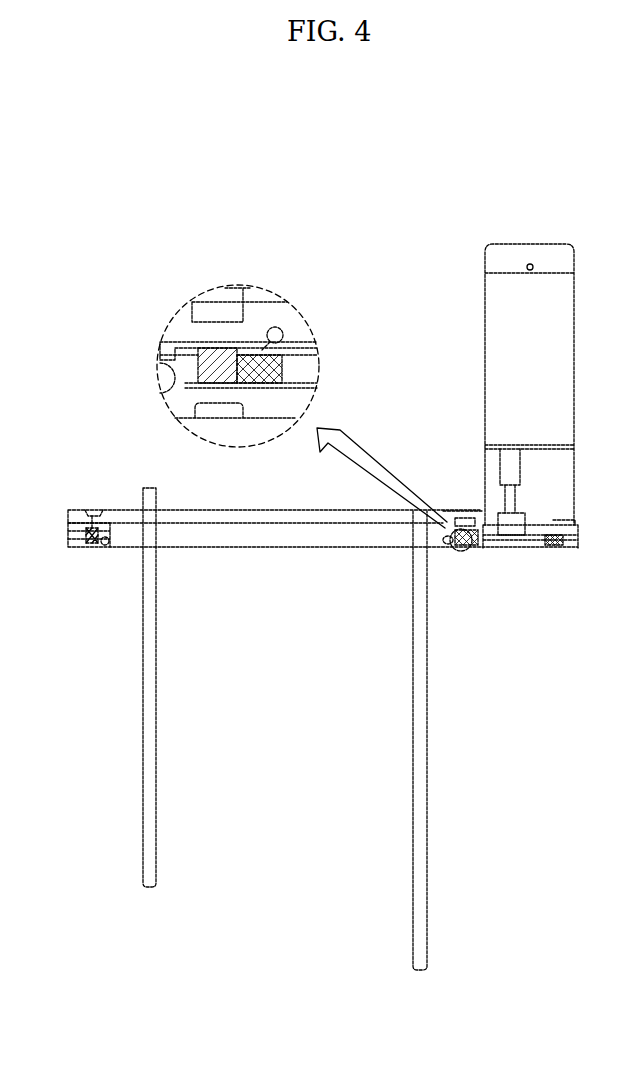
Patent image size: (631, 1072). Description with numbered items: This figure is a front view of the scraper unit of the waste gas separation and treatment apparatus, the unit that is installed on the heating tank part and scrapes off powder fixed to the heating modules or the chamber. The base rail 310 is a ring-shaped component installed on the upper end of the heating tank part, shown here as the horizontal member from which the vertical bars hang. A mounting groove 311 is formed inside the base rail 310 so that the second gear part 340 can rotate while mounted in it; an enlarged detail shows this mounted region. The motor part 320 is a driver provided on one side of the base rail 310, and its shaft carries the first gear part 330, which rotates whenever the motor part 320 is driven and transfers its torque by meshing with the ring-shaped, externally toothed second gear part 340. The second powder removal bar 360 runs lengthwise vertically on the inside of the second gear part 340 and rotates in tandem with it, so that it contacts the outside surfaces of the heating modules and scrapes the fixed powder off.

The base rail 310 is at (68, 547).
The mounting groove 311 is at (80, 530).
The motor part 320 is at (505, 373).
The first gear part 330 is at (285, 333).
The second gear part 340 is at (218, 345).
The second powder removal bar 360 is at (156, 723).